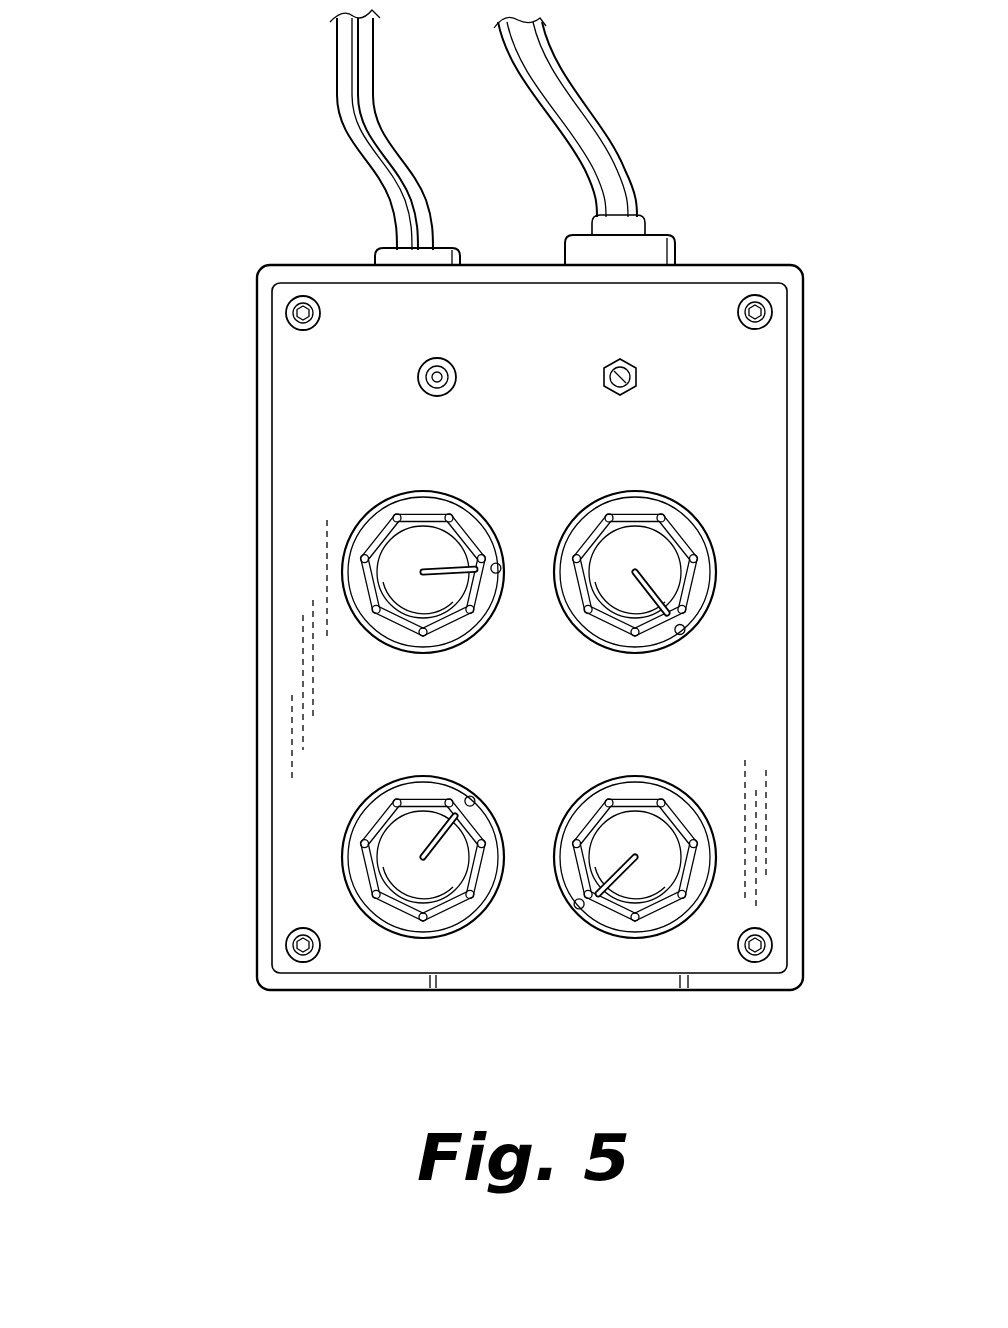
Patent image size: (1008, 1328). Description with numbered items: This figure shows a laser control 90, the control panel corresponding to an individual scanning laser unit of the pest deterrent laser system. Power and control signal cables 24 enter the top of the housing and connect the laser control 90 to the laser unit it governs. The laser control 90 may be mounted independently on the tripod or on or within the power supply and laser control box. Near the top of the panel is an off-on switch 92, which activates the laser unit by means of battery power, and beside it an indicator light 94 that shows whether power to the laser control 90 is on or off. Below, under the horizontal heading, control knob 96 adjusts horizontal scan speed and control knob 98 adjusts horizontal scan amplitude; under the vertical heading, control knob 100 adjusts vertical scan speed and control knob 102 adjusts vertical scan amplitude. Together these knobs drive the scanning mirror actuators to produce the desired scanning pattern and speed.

The power and control signal cable 24 is at (630, 112).
The laser control 90 is at (167, 493).
The off-on switch 92 is at (417, 375).
The indicator light 94 is at (637, 377).
The control knob 96 is at (345, 576).
The control knob 98 is at (708, 573).
The control knob 100 is at (345, 852).
The control knob 102 is at (708, 828).